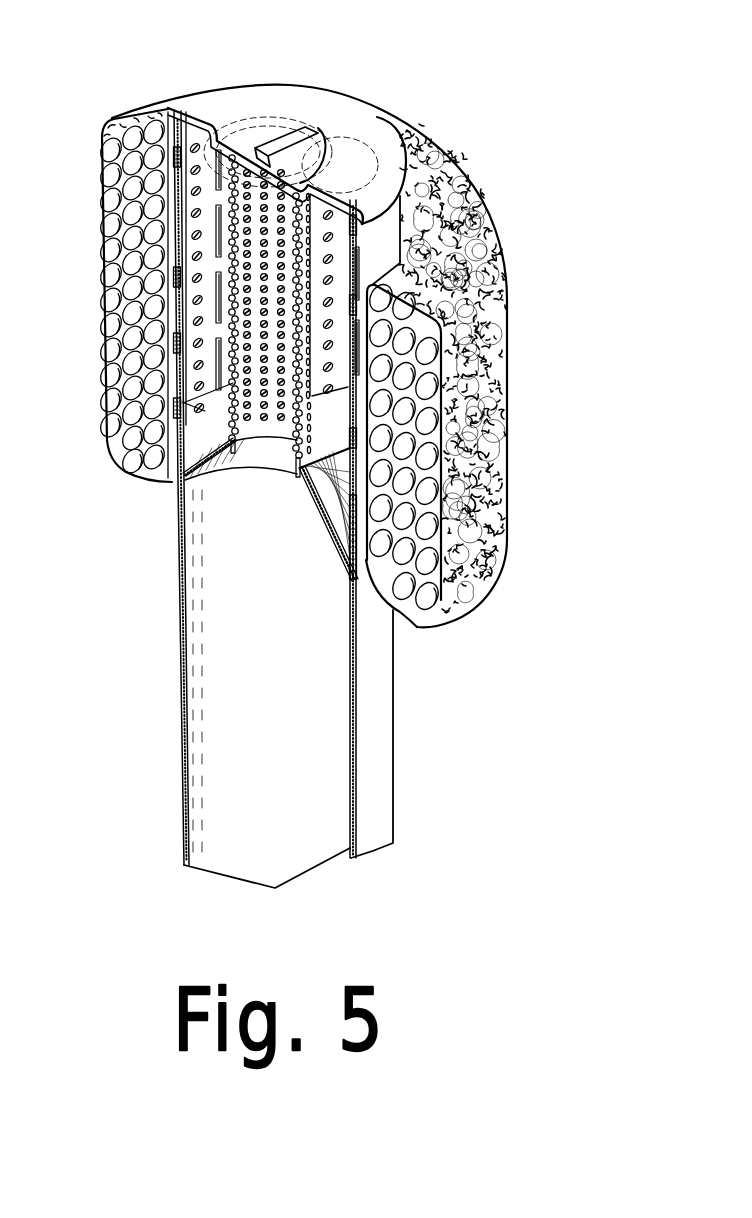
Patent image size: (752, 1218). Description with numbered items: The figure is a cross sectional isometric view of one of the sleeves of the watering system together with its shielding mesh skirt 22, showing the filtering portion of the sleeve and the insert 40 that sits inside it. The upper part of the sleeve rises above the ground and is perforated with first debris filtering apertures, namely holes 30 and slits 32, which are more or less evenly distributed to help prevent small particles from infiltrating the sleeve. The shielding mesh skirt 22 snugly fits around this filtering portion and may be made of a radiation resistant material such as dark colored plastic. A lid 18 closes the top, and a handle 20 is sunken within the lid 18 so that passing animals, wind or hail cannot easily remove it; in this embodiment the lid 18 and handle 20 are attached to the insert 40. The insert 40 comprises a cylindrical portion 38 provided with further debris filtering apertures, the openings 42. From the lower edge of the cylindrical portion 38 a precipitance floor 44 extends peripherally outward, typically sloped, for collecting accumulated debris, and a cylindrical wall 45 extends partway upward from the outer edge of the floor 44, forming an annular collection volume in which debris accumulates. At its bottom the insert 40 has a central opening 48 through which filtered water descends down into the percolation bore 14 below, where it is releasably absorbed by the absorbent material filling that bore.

The percolation bore 14 is at (250, 787).
The lid 18 is at (378, 130).
The handle 20 is at (303, 130).
The shielding mesh skirt 22 is at (107, 372).
The holes 30 is at (190, 147).
The slits 32 is at (215, 210).
The cylindrical portion 38 is at (237, 167).
The insert 40 is at (257, 455).
The openings 42 is at (248, 422).
The precipitance floor 44 is at (330, 507).
The cylindrical wall 45 is at (200, 407).
The central opening 48 is at (272, 437).